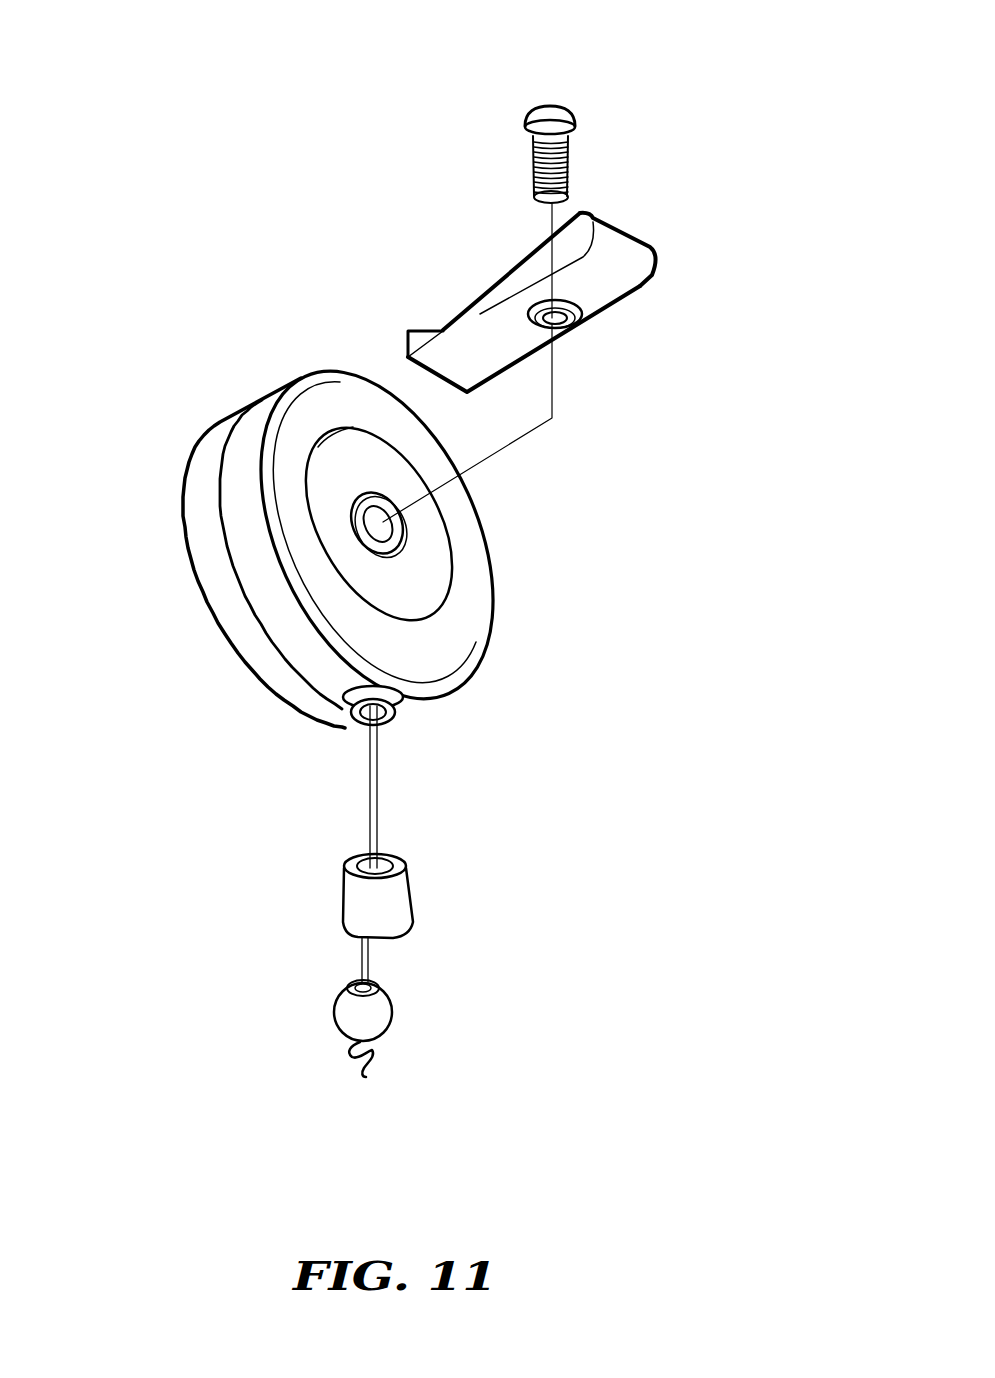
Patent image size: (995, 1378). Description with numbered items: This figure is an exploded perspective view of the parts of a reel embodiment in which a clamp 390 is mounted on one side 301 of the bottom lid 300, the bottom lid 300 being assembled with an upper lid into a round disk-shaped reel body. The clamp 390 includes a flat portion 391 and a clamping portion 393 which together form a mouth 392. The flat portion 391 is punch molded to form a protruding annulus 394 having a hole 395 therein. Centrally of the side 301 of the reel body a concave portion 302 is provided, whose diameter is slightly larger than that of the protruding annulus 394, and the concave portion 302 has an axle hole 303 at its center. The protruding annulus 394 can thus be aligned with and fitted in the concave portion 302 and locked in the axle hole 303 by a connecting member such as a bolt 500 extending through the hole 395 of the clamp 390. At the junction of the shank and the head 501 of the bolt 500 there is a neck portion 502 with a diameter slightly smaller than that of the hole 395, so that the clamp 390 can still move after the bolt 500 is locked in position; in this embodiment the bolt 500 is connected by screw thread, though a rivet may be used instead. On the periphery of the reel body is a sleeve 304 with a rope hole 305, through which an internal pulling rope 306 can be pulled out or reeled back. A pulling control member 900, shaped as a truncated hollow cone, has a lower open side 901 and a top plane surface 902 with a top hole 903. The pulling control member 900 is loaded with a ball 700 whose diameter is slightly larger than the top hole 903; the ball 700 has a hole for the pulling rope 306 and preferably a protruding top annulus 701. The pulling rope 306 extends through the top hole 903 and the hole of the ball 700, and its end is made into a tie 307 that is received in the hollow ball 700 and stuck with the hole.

The bottom lid 300 is at (252, 407).
The side 301 is at (443, 645).
The concave portion 302 is at (407, 543).
The axle hole 303 is at (370, 525).
The sleeve 304 is at (350, 713).
The rope hole 305 is at (403, 723).
The pulling rope 306 is at (365, 787).
The tie 307 is at (350, 1053).
The clamp 390 is at (640, 253).
The flat portion 391 is at (490, 353).
The mouth 392 is at (403, 343).
The clamping portion 393 is at (507, 273).
The protruding annulus 394 is at (585, 317).
The hole 395 is at (562, 330).
The bolt 500 is at (567, 175).
The head 501 is at (548, 104).
The neck portion 502 is at (573, 143).
The ball 700 is at (372, 1018).
The protruding top annulus 701 is at (358, 1002).
The pulling control member 900 is at (392, 918).
The lower open side 901 is at (353, 930).
The top plane surface 902 is at (392, 860).
The top hole 903 is at (345, 866).